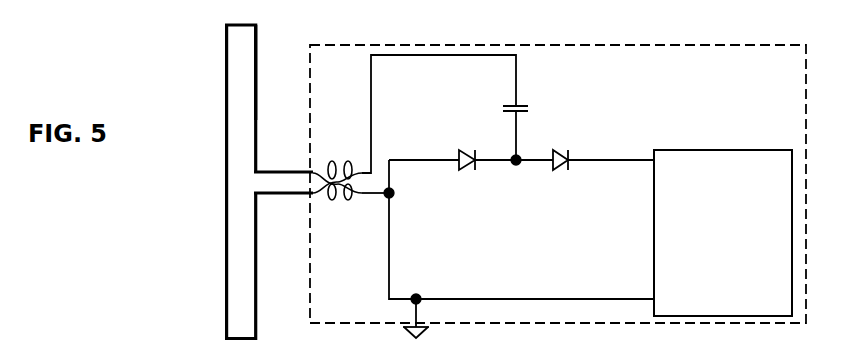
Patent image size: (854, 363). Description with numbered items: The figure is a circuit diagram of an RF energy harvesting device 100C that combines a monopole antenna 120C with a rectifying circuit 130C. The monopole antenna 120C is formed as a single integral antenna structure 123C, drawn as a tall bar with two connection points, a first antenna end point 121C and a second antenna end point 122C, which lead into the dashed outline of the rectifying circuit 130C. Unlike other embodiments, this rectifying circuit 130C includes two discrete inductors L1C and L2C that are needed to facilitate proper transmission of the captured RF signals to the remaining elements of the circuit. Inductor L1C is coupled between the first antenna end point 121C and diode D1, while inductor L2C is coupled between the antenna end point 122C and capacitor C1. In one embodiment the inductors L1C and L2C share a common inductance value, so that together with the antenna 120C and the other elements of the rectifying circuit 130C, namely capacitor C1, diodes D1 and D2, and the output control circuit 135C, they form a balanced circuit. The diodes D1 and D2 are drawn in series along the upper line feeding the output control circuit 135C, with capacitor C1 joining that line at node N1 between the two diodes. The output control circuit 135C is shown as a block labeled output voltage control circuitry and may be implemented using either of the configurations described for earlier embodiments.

The RF energy harvesting device 100C is at (207, 51).
The monopole antenna 120C is at (207, 214).
The first antenna end point 121C is at (285, 194).
The antenna end point 122C is at (279, 170).
The integral antenna structure 123C is at (258, 50).
The inductor L1C is at (348, 200).
The inductor L2C is at (348, 166).
The capacitor C1 is at (510, 104).
The diode D1 is at (470, 150).
The diode D2 is at (562, 170).
The node N1 is at (518, 155).
The rectifying circuit 130C is at (765, 98).
The output control circuit 135C is at (742, 286).